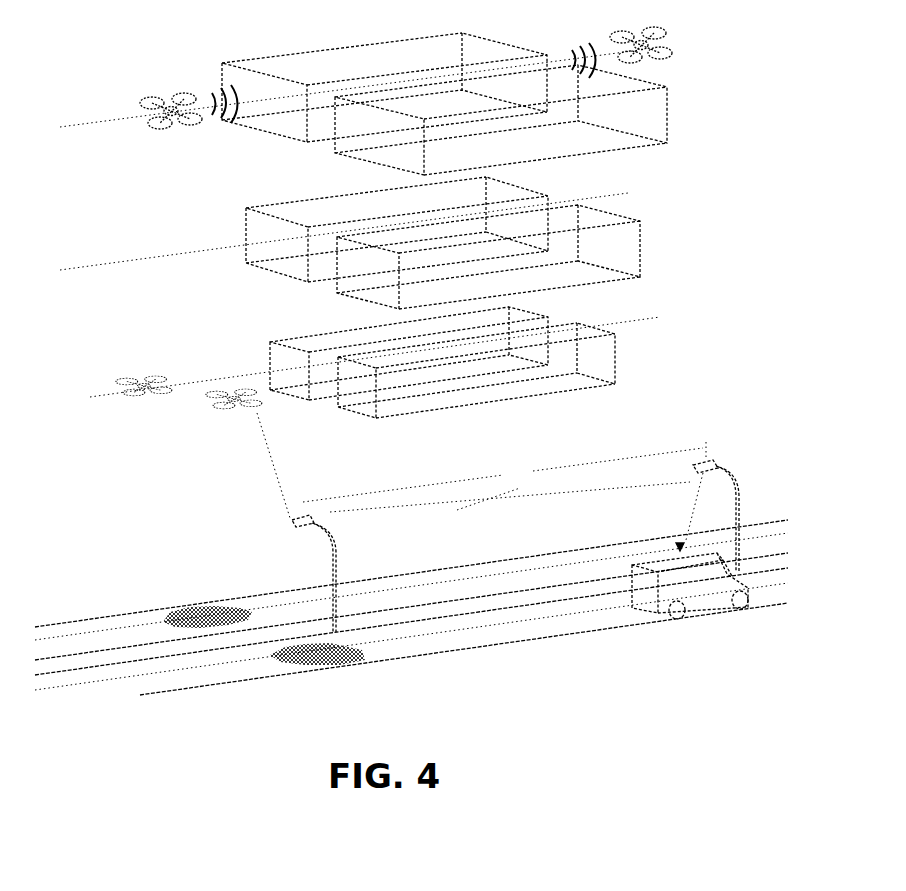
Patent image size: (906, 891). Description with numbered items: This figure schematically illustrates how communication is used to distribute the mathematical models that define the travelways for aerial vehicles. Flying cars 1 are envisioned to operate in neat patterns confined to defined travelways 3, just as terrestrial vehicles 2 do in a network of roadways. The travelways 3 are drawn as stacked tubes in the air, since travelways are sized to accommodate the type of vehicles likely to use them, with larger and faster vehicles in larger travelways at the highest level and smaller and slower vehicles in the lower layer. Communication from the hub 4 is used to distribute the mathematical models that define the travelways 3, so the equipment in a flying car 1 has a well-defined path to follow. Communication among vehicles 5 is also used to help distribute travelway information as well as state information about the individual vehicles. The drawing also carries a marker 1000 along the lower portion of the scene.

The flying car 1 is at (140, 368).
The terrestrial vehicle 2 is at (690, 586).
The travelway 3 is at (158, 165).
The communication from the hub 4 is at (511, 546).
The communication among vehicles 5 is at (404, 78).
The distance marker 1000 is at (504, 477).